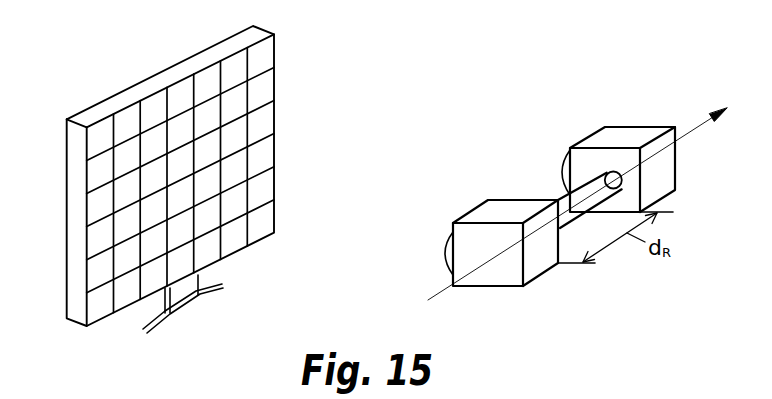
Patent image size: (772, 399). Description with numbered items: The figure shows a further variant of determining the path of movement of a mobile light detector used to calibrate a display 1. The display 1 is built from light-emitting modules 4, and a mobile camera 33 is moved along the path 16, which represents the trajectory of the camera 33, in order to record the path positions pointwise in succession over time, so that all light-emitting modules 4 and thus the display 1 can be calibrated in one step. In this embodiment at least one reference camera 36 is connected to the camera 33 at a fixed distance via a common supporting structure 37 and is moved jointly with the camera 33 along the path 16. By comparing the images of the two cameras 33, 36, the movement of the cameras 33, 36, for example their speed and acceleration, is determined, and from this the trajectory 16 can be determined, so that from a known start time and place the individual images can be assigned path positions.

The display 1 is at (78, 323).
The light-emitting module 4 is at (267, 218).
The path 16 is at (453, 290).
The camera 33 is at (675, 175).
The reference camera 36 is at (535, 283).
The supporting structure 37 is at (563, 198).